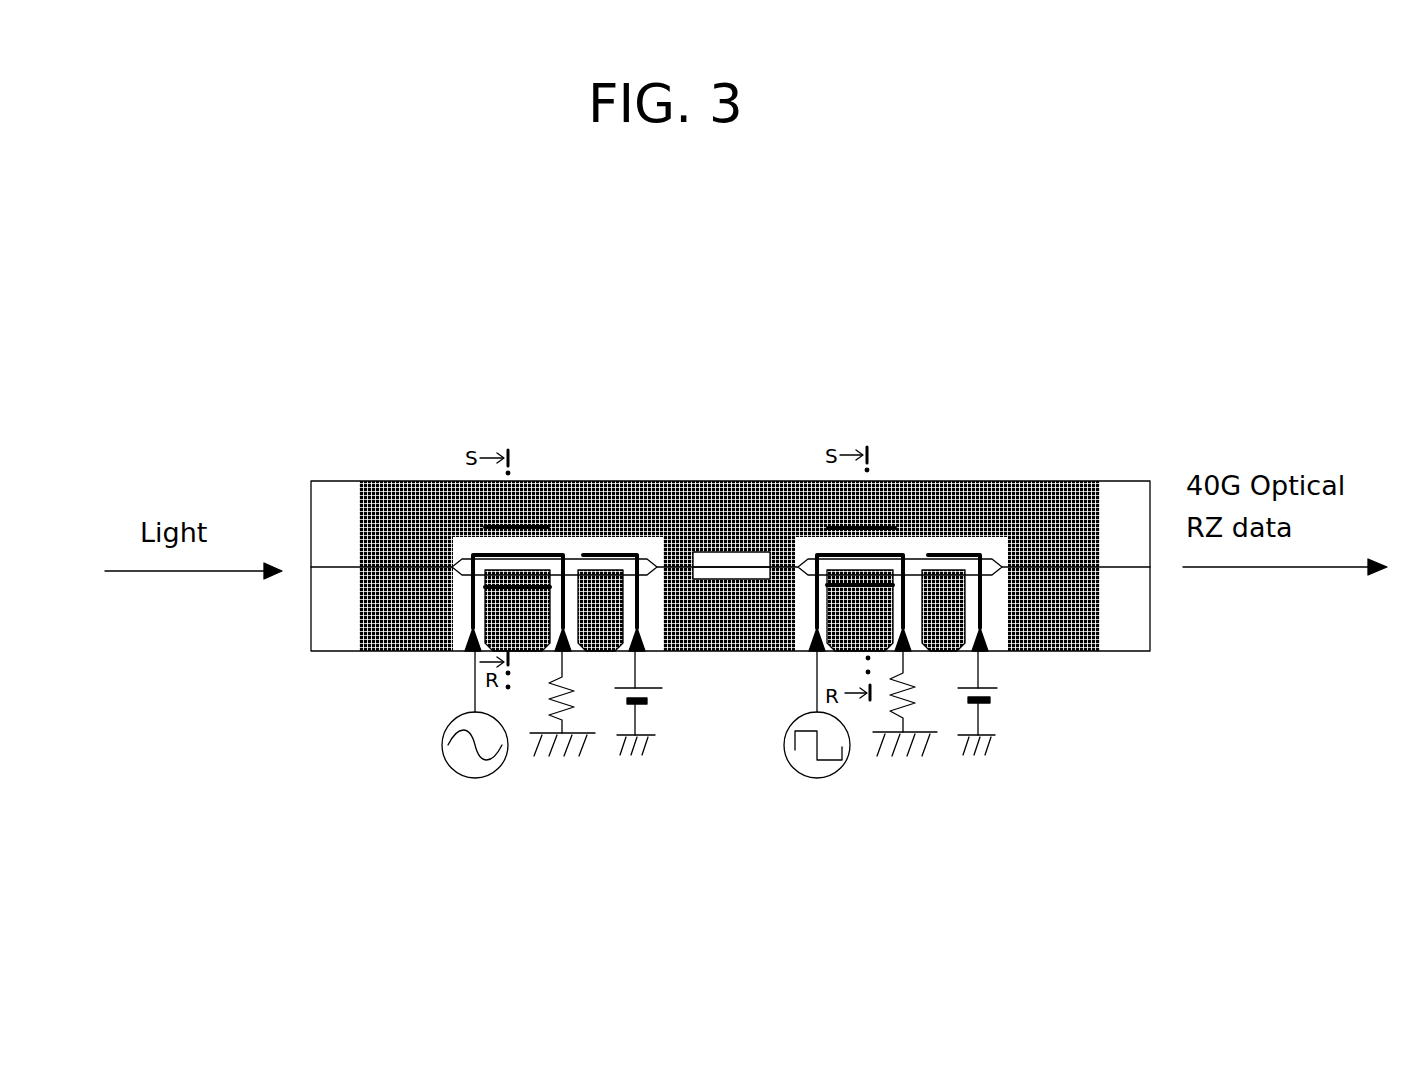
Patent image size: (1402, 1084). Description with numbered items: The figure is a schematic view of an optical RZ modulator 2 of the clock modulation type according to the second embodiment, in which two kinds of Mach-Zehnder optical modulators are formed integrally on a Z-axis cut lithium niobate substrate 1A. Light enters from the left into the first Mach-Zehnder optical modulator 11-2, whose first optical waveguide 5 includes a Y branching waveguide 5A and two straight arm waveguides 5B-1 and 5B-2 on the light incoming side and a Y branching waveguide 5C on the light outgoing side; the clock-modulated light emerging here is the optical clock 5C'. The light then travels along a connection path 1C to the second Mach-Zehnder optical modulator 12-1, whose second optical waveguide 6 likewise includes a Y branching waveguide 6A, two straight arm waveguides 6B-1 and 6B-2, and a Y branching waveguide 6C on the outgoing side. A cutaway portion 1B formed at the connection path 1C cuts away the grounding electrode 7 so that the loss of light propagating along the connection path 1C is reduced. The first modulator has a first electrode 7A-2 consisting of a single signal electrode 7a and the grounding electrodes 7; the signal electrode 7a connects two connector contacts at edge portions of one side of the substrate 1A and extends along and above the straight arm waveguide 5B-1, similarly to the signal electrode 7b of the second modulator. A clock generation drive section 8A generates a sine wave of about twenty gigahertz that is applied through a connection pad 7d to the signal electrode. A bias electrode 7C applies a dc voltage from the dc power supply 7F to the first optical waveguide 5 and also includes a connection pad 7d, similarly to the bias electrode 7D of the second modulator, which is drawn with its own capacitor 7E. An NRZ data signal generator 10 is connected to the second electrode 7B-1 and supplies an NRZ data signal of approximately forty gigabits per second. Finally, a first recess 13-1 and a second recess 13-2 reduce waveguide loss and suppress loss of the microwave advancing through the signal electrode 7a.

The optical RZ modulator 2 is at (268, 492).
The substrate 1A is at (293, 614).
The cutaway portion 1B is at (733, 551).
The connection path 1C is at (712, 582).
The first optical waveguide 5 is at (448, 576).
The Y branching waveguide 5A is at (458, 566).
The straight arm waveguide 5B-1 is at (573, 558).
The straight arm waveguide 5B-2 is at (733, 738).
The Y branching waveguide 5C is at (660, 529).
The 40G optical clock output 5C' is at (833, 464).
The second optical waveguide 6 is at (802, 560).
The Y branching waveguide 6A is at (790, 625).
The straight arm waveguide 6B-1 is at (918, 555).
The straight arm waveguide 6B-2 is at (905, 575).
The Y branching waveguide 6C is at (1000, 560).
The grounding electrode 7 is at (513, 640).
The signal electrode 7a is at (527, 527).
The signal electrode 7b is at (850, 558).
The connection pad 7d is at (470, 653).
The first electrode 7A-2 is at (550, 553).
The second electrode 7B-1 is at (840, 550).
The bias electrode 7C is at (645, 628).
The bias electrode 7D is at (983, 622).
The bypass capacitor 7E is at (1000, 690).
The dc power supply 7F is at (656, 690).
The clock generation drive section 8A is at (442, 745).
The NRZ data signal generator 10 is at (785, 742).
The first Mach-Zehnder optical modulator 11-2 is at (443, 656).
The second Mach-Zehnder optical modulator 12-1 is at (1045, 659).
The first recess 13-1 is at (503, 527).
The second recess 13-2 is at (497, 588).